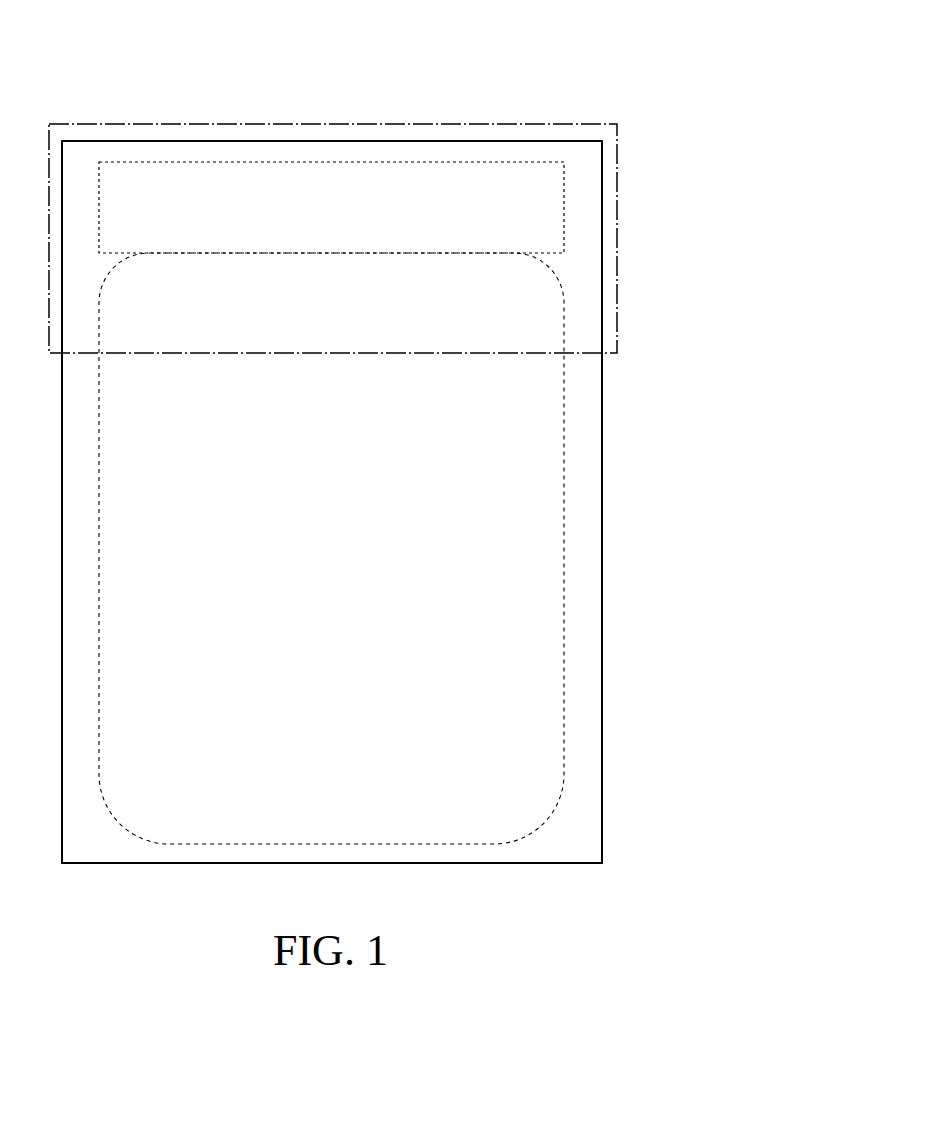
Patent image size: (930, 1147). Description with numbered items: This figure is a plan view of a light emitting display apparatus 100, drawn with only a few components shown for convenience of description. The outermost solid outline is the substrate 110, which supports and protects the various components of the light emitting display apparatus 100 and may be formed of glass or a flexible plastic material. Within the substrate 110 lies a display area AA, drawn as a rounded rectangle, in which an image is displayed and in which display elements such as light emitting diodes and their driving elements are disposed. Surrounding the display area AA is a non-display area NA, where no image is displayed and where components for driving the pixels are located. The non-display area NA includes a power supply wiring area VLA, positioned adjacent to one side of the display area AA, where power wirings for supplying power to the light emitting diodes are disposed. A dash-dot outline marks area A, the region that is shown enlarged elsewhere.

The light emitting display apparatus 100 is at (592, 42).
The area A is at (617, 124).
The substrate 110 is at (602, 662).
The power supply wiring area VLA is at (564, 207).
The display area AA is at (528, 535).
The non-display area NA is at (580, 600).